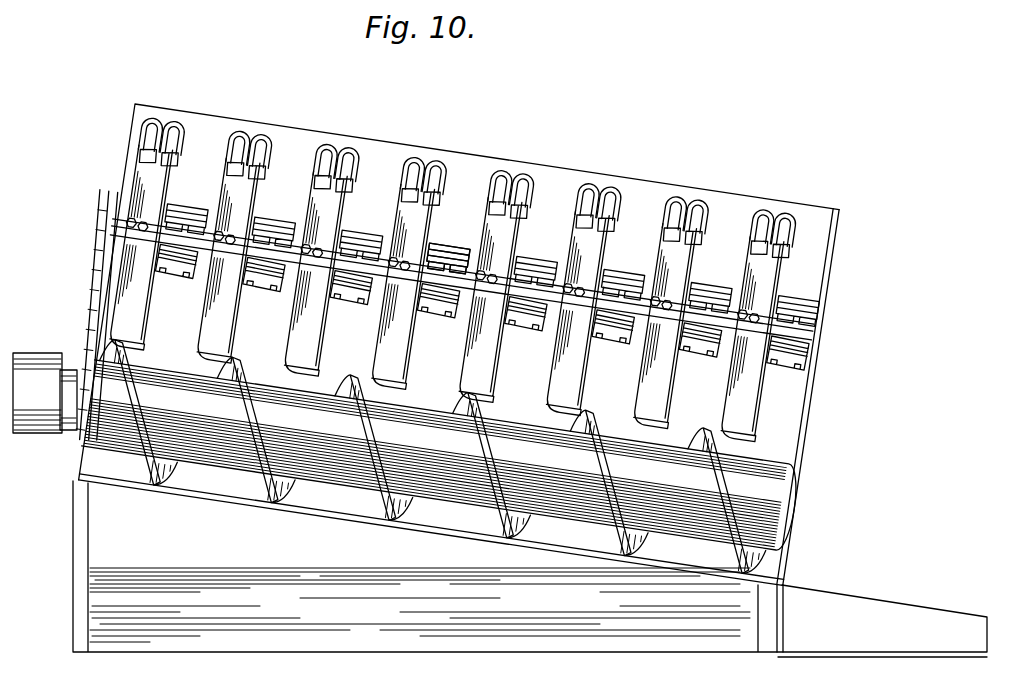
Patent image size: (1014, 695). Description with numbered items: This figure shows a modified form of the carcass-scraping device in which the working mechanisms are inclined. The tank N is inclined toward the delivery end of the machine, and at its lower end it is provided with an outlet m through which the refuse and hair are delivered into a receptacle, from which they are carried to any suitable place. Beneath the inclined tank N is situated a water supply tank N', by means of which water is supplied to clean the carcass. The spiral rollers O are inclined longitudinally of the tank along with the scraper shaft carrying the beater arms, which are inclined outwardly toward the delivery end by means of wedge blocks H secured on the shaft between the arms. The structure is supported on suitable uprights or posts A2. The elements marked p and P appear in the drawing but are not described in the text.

The hanger strap p is at (339, 263).
The wedge blocks H is at (386, 250).
The plate P is at (470, 256).
The spiral rollers O is at (408, 458).
The uprights or posts A2 is at (86, 557).
The tank N is at (431, 530).
The outlet m is at (786, 563).
The water supply tank N' is at (420, 605).